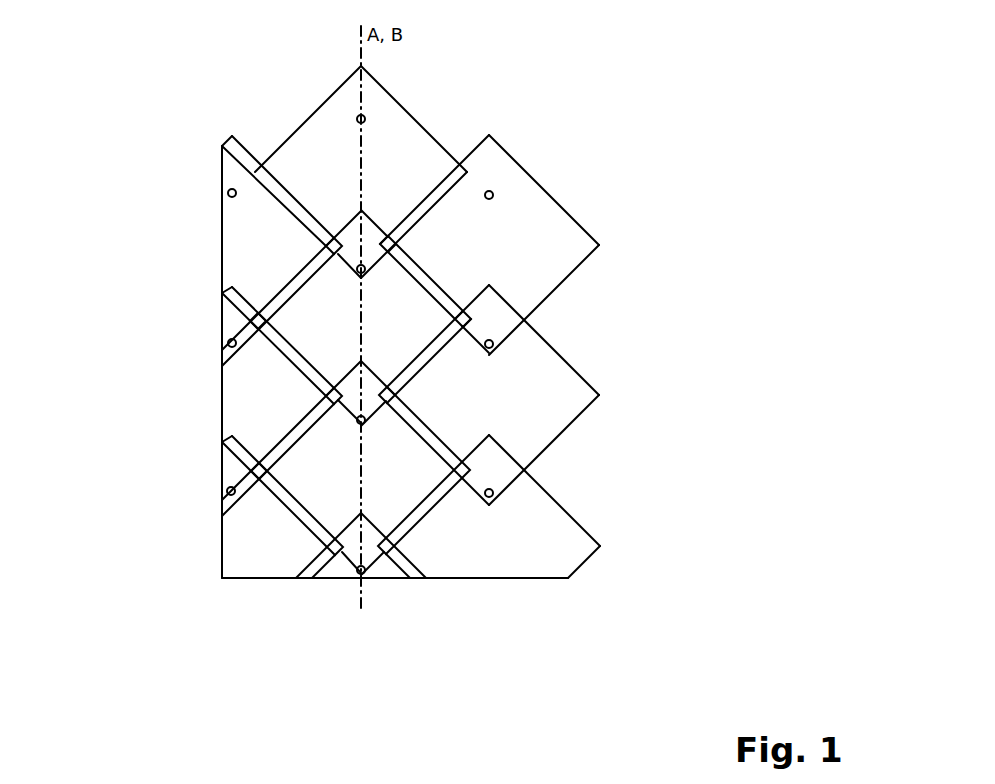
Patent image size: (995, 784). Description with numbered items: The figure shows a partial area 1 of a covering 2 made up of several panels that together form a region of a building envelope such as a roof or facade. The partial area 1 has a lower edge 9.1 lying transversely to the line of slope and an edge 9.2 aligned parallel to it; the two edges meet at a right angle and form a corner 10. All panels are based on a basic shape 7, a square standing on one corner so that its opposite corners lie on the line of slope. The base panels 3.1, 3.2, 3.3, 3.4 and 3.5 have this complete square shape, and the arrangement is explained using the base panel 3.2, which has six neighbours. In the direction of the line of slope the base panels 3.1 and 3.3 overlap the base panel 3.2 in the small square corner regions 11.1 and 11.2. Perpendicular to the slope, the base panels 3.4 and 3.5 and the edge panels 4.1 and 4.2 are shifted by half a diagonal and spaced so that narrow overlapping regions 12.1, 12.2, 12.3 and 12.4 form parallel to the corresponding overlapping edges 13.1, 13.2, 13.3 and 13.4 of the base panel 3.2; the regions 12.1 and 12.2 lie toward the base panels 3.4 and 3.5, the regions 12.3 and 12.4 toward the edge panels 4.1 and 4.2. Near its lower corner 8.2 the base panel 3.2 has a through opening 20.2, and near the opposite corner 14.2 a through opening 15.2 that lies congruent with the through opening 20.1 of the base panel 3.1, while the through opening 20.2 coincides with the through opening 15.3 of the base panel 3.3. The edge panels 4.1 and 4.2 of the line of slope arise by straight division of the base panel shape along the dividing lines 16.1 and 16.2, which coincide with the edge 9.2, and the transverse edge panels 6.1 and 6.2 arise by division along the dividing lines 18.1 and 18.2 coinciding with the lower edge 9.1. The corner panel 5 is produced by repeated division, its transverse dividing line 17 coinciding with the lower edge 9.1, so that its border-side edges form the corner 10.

The partial area 1 is at (470, 110).
The covering 2 is at (545, 140).
The base panel 3.1 is at (333, 145).
The base panel 3.2 is at (325, 322).
The base panel 3.3 is at (282, 420).
The base panel 3.4 is at (530, 268).
The base panel 3.5 is at (433, 353).
The edge panel of the line of slope 4.1 is at (255, 213).
The edge panel of the line of slope 4.2 is at (262, 488).
The corner panel 5 is at (237, 578).
The transverse edge panel 6.1 is at (334, 568).
The transverse edge panel 6.2 is at (498, 548).
The basic shape 7 is at (440, 377).
The lower corner 8.2 is at (372, 430).
The lower edge 9.1 is at (365, 578).
The edge 9.2 is at (285, 326).
The corner 10 is at (250, 553).
The square corner region 11.1 is at (347, 238).
The square corner region 11.2 is at (425, 430).
The overlapping region 12.1 is at (599, 395).
The overlapping region 12.2 is at (432, 295).
The overlapping region 12.3 is at (295, 277).
The overlapping region 12.4 is at (293, 357).
The overlapping edge 13.1 is at (446, 407).
The overlapping edge 13.2 is at (410, 262).
The overlapping edge 13.3 is at (315, 259).
The overlapping edge 13.4 is at (268, 392).
The corner 14.2 is at (360, 211).
The through opening 15.2 is at (255, 306).
The through opening 15.3 is at (440, 495).
The dividing line 16.1 is at (220, 220).
The dividing line 16.2 is at (222, 458).
The transverse dividing line 17 is at (255, 578).
The dividing line 18.1 is at (297, 578).
The dividing line 18.2 is at (403, 578).
The through opening 20.1 is at (365, 268).
The through opening 20.2 is at (278, 455).